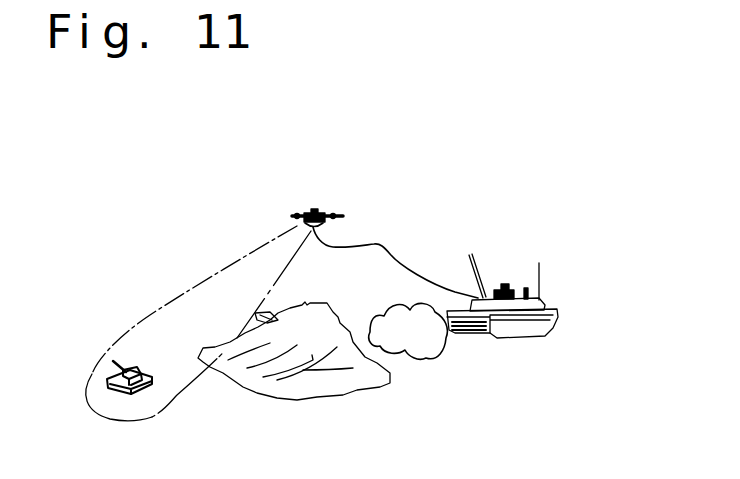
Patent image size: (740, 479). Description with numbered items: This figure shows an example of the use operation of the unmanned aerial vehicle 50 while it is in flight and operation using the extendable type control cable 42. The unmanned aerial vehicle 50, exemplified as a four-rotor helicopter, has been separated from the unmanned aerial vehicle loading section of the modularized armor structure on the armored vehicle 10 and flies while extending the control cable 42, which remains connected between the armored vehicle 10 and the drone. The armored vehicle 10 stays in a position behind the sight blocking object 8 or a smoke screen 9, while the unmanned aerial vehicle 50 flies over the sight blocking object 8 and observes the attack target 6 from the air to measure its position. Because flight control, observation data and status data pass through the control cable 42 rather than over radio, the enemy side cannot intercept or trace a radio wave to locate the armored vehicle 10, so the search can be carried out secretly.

The unmanned aerial vehicle 50 is at (337, 198).
The extendable type control cable 42 is at (376, 245).
The armored vehicle 10 is at (549, 272).
The attack target 6 is at (110, 374).
The sight blocking object 8 is at (310, 305).
The smoke screen 9 is at (393, 322).